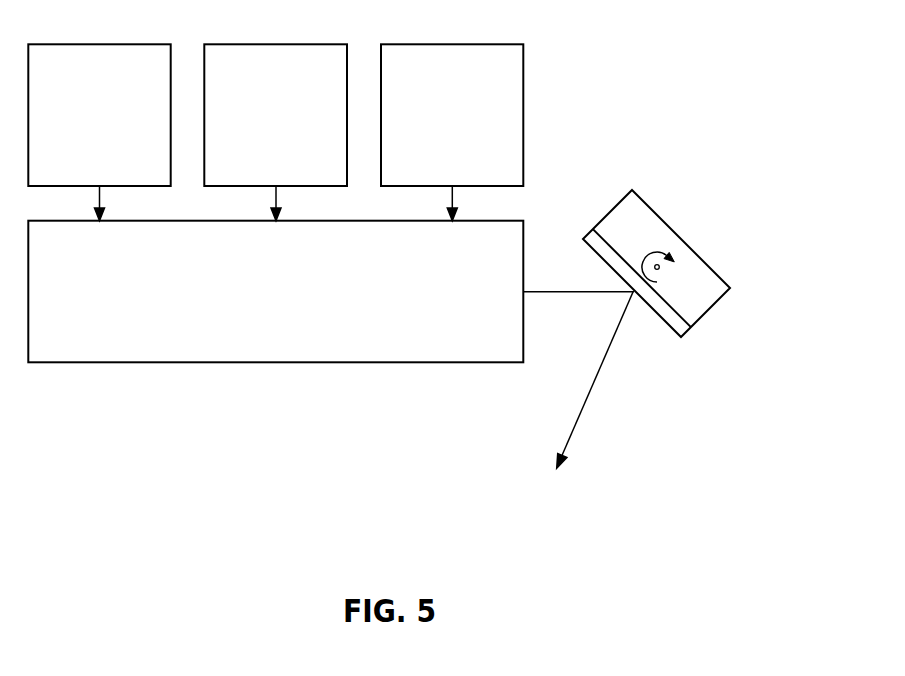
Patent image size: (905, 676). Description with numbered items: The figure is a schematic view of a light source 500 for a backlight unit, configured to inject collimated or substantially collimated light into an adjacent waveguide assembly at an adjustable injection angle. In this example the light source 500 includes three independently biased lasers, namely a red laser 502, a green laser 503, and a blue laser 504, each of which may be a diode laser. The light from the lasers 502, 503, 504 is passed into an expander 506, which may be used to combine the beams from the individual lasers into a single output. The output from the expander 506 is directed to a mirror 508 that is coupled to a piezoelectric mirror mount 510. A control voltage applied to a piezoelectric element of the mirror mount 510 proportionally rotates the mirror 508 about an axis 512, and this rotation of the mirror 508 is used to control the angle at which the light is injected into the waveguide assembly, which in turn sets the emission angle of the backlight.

The light source 500 is at (763, 81).
The red laser 502 is at (119, 126).
The green laser 503 is at (296, 126).
The blue laser 504 is at (472, 126).
The expander 506 is at (296, 302).
The mirror 508 is at (688, 342).
The piezoelectric mirror mount 510 is at (610, 210).
The axis 512 is at (660, 268).